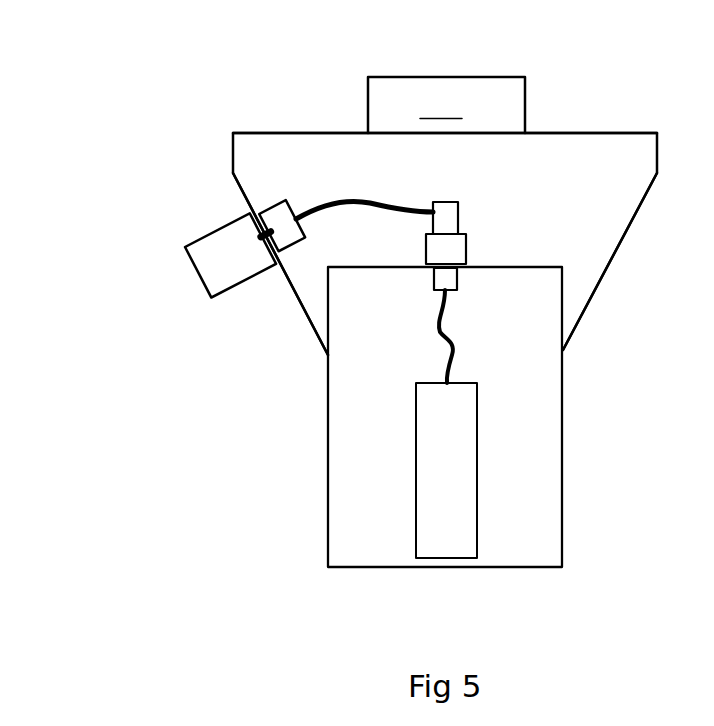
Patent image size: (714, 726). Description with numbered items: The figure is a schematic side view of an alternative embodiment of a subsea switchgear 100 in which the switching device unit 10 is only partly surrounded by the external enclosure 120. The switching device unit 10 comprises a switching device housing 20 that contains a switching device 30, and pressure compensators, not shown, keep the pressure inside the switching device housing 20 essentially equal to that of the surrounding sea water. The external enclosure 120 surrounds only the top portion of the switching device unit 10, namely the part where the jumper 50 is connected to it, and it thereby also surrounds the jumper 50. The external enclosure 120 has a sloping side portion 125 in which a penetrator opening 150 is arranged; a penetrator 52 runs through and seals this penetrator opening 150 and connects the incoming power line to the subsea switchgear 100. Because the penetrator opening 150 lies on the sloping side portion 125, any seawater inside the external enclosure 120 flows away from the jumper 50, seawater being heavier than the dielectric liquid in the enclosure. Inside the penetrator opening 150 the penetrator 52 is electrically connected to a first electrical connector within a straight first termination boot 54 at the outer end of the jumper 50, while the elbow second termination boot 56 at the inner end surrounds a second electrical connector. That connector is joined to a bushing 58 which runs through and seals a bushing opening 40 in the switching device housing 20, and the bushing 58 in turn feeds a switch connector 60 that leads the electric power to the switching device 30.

The switching device unit 10 is at (605, 416).
The switching device housing 20 is at (327, 493).
The switching device 30 is at (458, 486).
The bushing opening 40 is at (478, 252).
The housing power connection 50 is at (347, 188).
The penetrator 52 is at (243, 270).
The first termination boot 54 is at (259, 194).
The second termination boot 56 is at (453, 202).
The bushing 58 is at (457, 278).
The switch connector 60 is at (447, 358).
The subsea switchgear 100 is at (130, 88).
The external enclosure 120 is at (315, 133).
The sloping side portion 125 is at (610, 316).
The penetrator opening 150 is at (229, 201).